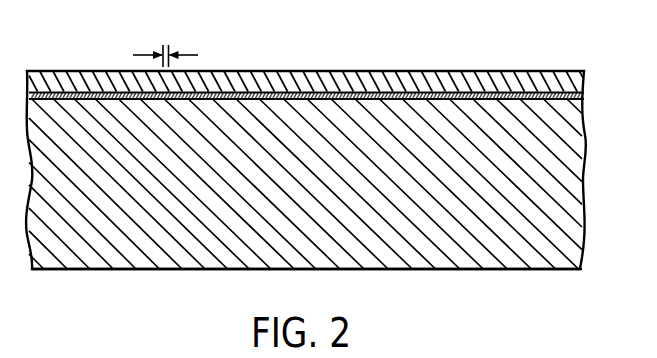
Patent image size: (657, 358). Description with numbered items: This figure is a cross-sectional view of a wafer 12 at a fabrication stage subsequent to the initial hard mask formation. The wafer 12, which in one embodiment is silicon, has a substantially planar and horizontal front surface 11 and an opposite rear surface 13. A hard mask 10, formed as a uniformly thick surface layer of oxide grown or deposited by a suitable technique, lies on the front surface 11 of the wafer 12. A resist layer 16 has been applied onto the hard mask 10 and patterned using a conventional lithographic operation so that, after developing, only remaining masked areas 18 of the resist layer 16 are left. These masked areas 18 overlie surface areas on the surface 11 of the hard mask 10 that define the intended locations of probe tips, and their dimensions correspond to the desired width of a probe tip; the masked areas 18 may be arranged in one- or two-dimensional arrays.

The hard mask 10 is at (327, 165).
The front surface 11 is at (369, 93).
The wafer 12 is at (587, 146).
The rear surface 13 is at (423, 270).
The resist layer 16 is at (433, 71).
The masked areas 18 is at (164, 46).